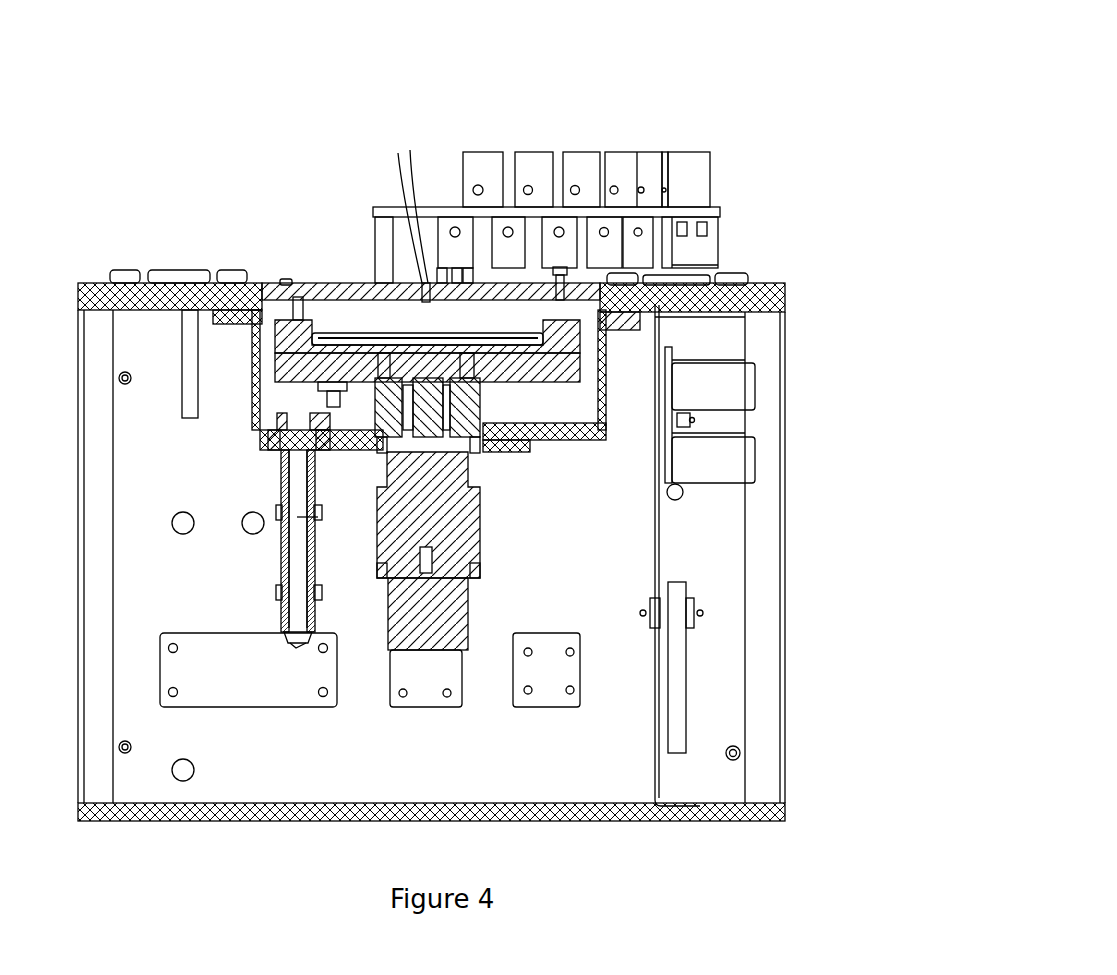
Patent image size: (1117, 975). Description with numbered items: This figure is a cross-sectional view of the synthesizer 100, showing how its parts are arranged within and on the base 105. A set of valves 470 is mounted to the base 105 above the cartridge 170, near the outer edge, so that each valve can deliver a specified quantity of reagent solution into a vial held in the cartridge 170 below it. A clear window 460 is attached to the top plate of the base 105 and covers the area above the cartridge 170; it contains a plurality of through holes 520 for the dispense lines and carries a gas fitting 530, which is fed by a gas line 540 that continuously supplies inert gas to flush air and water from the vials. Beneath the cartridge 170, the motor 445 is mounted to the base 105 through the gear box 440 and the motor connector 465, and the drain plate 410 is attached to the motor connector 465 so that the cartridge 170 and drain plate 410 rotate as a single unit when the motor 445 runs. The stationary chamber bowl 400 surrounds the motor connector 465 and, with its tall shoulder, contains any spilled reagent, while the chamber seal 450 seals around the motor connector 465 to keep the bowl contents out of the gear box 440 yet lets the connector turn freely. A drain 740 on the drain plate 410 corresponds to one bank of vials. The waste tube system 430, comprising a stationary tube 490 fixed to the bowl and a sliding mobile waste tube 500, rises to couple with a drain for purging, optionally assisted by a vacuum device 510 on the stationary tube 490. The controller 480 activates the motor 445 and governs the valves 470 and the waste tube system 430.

The synthesizer 100 is at (1000, 262).
The base 105 is at (785, 475).
The cartridge 170 is at (548, 341).
The chamber bowl 400 is at (600, 403).
The drain plate 410 is at (578, 378).
The waste tube system 430 is at (318, 515).
The gear box 440 is at (483, 547).
The motor 445 is at (470, 610).
The chamber seal 450 is at (500, 458).
The clear window 460 is at (680, 263).
The motor connector 465 is at (607, 423).
The set of valves 470 is at (485, 165).
The controller 480 is at (688, 660).
The stationary tube 490 is at (313, 480).
The mobile waste tube 500 is at (300, 613).
The vacuum device 510 is at (248, 670).
The through holes 520 is at (473, 278).
The gas fitting 530 is at (420, 280).
The gas line 540 is at (407, 163).
The drain 740 is at (312, 397).